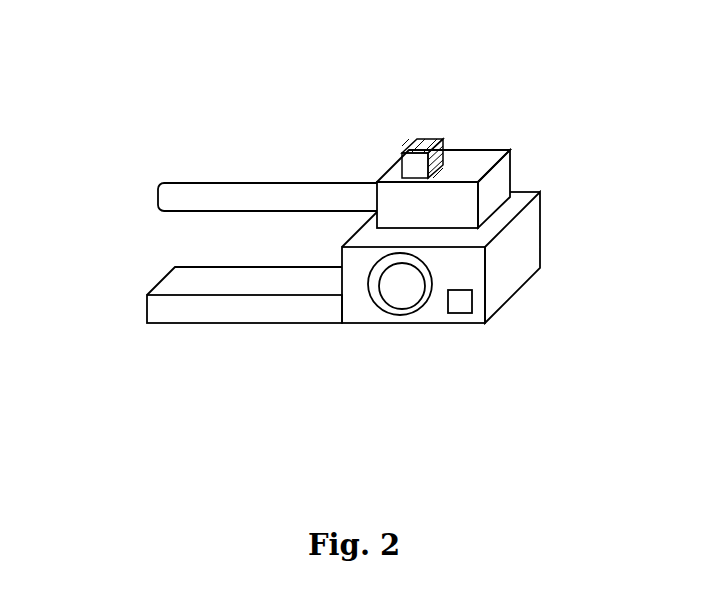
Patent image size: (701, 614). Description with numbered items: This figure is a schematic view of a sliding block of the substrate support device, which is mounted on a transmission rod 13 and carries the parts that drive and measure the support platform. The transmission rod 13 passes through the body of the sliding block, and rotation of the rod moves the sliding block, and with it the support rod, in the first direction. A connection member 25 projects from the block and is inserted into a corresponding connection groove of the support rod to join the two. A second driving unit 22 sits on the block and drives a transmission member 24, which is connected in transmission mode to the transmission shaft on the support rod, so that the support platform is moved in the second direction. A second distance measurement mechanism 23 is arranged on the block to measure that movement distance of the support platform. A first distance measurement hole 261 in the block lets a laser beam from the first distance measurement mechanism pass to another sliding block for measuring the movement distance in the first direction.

The transmission rod 13 is at (392, 300).
The second driving unit 22 is at (477, 148).
The second distance measurement mechanism 23 is at (427, 147).
The transmission member 24 is at (238, 182).
The connection member 25 is at (190, 325).
The first distance measurement hole 261 is at (457, 307).